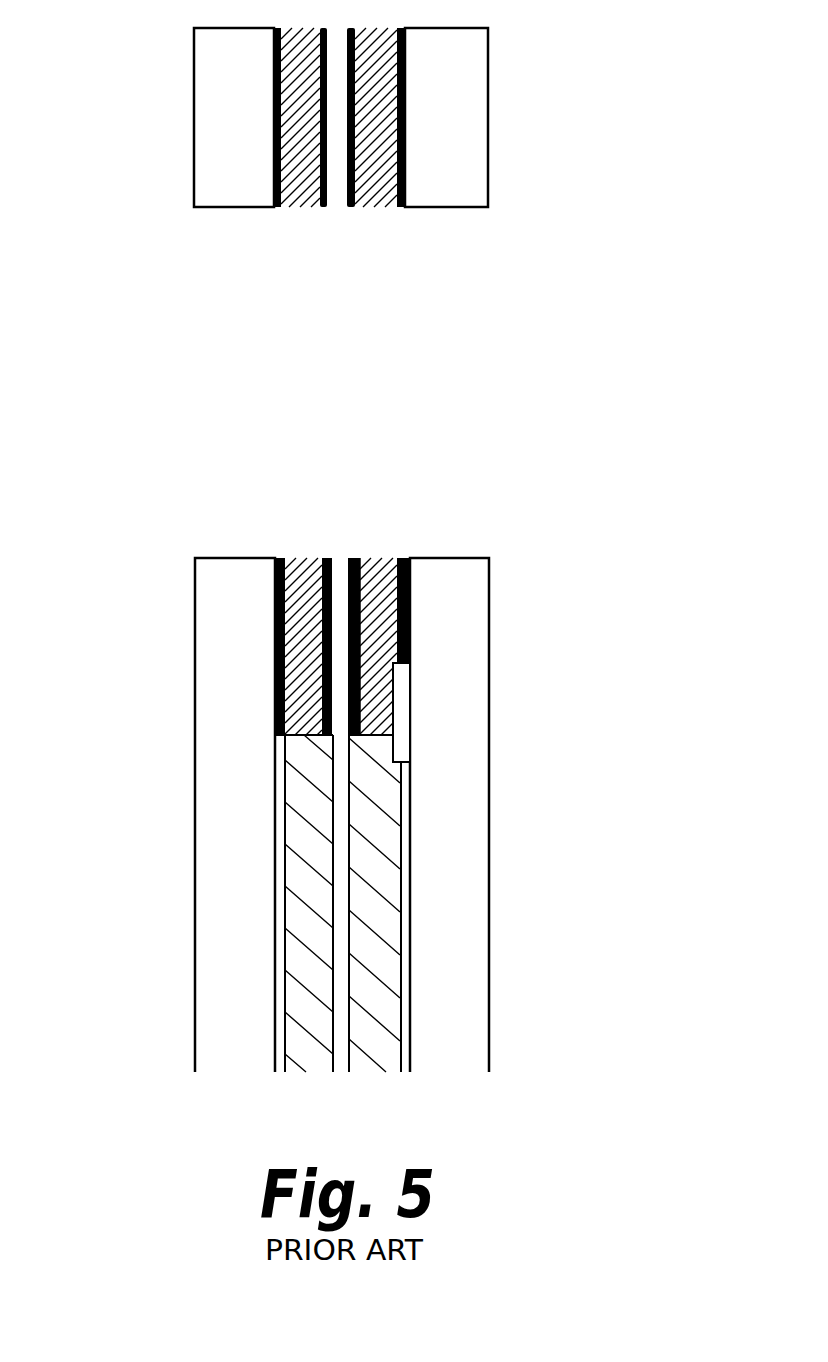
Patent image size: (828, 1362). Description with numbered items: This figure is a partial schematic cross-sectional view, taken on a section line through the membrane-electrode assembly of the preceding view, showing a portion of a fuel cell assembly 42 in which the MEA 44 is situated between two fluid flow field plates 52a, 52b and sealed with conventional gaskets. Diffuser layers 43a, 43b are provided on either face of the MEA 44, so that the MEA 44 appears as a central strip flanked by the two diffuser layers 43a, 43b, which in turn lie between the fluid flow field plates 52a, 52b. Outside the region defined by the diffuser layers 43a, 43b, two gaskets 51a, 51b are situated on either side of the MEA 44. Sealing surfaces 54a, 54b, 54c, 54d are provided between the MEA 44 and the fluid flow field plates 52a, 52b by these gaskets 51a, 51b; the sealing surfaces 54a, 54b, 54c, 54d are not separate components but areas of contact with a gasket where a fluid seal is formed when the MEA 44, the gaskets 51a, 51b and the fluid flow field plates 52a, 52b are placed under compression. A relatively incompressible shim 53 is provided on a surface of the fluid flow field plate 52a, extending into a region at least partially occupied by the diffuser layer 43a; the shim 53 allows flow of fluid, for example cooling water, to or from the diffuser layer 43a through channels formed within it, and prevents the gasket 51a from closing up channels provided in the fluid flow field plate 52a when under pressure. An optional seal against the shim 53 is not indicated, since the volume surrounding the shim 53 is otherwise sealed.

The sensor element (prior art) 42 is at (346, 332).
The diffuser layer 43a is at (385, 923).
The diffuser layer 43b is at (308, 932).
The MEA 44 is at (338, 993).
The gasket 51a is at (383, 563).
The gasket 51b is at (300, 560).
The fluid flow field plate 52a is at (473, 659).
The fluid flow field plate 52b is at (257, 659).
The shim 53 is at (401, 720).
The sealing surface 54a is at (408, 560).
The sealing surface 54b is at (376, 566).
The sealing surface 54c is at (325, 560).
The sealing surface 54d is at (273, 560).